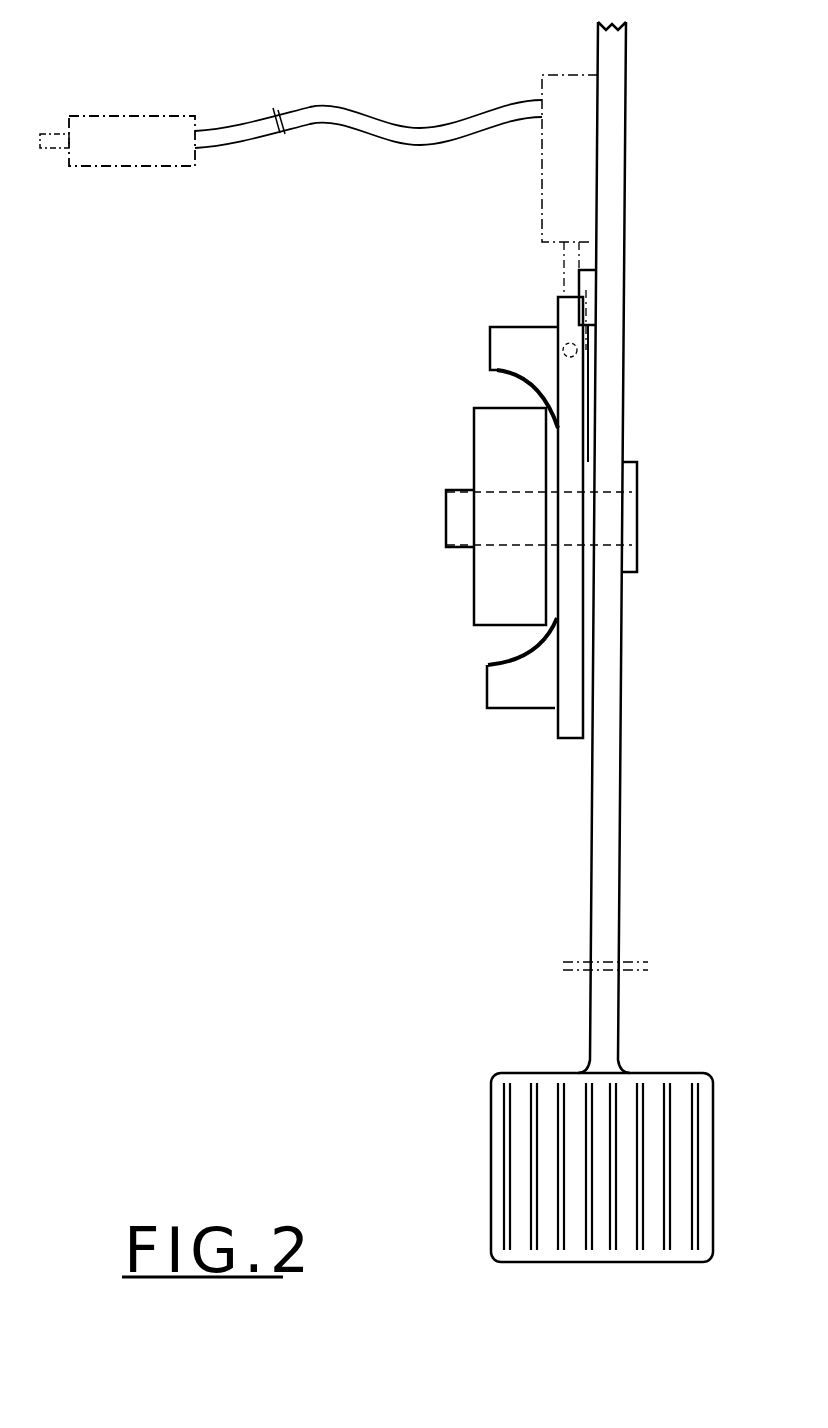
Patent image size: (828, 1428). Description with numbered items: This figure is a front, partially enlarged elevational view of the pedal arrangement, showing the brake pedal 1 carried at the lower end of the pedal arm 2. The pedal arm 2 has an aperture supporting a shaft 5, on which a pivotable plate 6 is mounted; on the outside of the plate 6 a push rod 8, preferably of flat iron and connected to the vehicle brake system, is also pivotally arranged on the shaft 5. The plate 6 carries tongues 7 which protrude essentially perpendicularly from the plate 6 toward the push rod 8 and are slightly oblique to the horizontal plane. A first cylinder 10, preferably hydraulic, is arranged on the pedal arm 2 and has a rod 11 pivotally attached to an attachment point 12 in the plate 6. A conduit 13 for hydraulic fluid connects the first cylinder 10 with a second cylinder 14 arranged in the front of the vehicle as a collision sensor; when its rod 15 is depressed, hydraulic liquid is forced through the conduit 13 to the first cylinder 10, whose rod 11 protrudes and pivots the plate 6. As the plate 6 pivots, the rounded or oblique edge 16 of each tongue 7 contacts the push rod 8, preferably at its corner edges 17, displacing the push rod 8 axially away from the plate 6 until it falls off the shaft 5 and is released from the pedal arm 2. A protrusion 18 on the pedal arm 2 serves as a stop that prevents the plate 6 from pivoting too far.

The brake pedal 1 is at (448, 1120).
The pedal arm 2 is at (608, 382).
The shaft 5 is at (455, 530).
The plate 6 is at (568, 727).
The tongues 7 is at (517, 327).
The push rod 8 is at (483, 460).
The first cylinder 10 is at (560, 83).
The rod 11 is at (564, 266).
The attachment point 12 is at (588, 340).
The conduit 13 is at (310, 107).
The second cylinder 14 is at (126, 130).
The rod 15 is at (50, 135).
The edge 16 is at (520, 375).
The corner edges 17 is at (543, 407).
The protrusion 18 is at (587, 280).